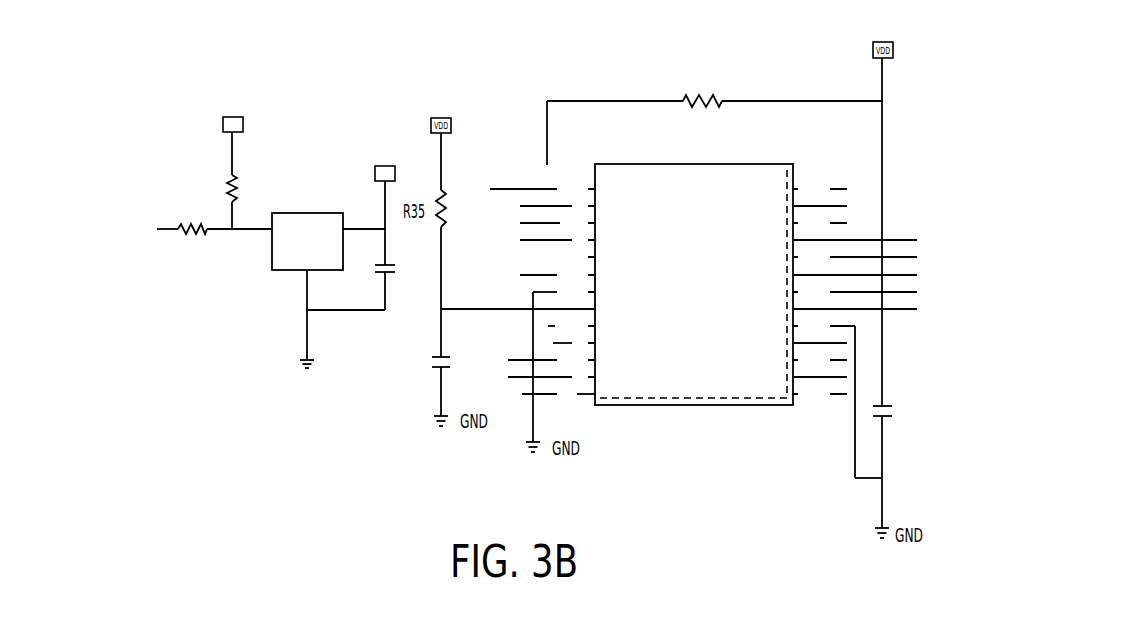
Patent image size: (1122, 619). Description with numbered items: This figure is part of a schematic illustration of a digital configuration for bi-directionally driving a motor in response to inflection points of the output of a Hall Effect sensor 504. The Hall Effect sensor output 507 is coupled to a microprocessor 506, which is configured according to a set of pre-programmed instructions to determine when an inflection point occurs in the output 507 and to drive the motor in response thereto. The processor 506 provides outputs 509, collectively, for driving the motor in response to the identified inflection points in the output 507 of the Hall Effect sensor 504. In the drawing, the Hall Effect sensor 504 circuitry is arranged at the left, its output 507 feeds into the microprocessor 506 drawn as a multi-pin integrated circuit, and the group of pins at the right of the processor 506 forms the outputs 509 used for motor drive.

The Hall Effect sensor 504 is at (289, 123).
The microprocessor 506 is at (701, 430).
The Hall Effect sensor output 507 is at (510, 189).
The outputs 509 is at (923, 240).